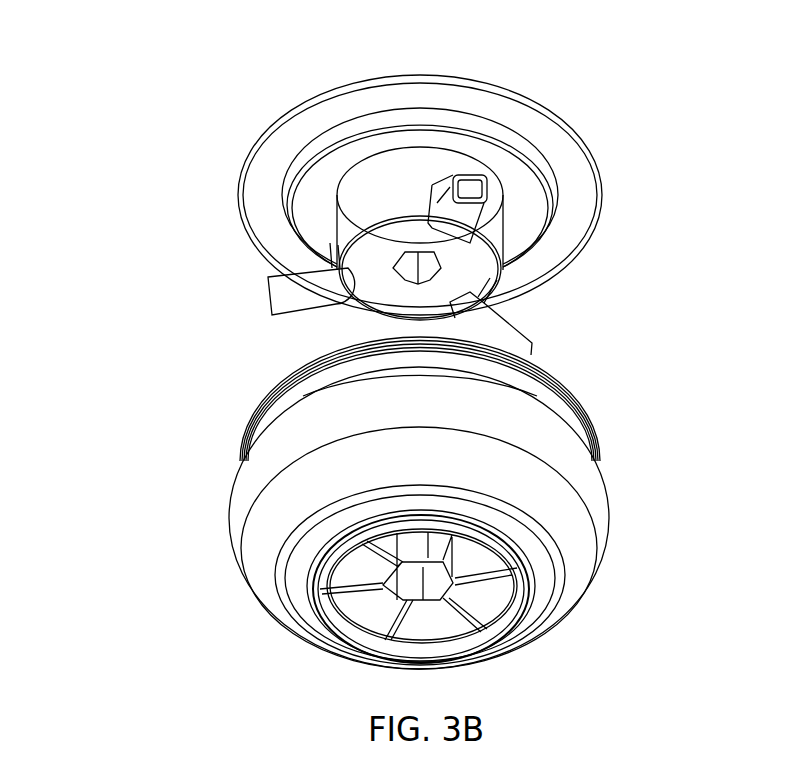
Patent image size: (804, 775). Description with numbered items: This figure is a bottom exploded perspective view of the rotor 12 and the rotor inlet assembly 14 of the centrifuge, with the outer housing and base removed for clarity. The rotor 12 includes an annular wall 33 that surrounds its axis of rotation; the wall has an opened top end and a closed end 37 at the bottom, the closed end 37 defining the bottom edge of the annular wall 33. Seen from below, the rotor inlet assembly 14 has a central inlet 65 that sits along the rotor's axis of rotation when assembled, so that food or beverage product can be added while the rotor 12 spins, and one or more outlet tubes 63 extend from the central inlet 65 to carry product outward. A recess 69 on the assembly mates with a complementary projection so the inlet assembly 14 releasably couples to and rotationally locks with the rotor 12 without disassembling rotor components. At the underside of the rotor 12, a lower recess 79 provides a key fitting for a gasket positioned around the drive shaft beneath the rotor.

The rotor 12 is at (187, 510).
The rotor inlet assembly 14 is at (190, 211).
The annular wall 33 is at (582, 540).
The closed end 37 is at (294, 591).
The outlet tubes 63 is at (480, 325).
The central inlet 65 is at (388, 167).
The recess 69 is at (424, 266).
The lower recess 79 is at (420, 580).